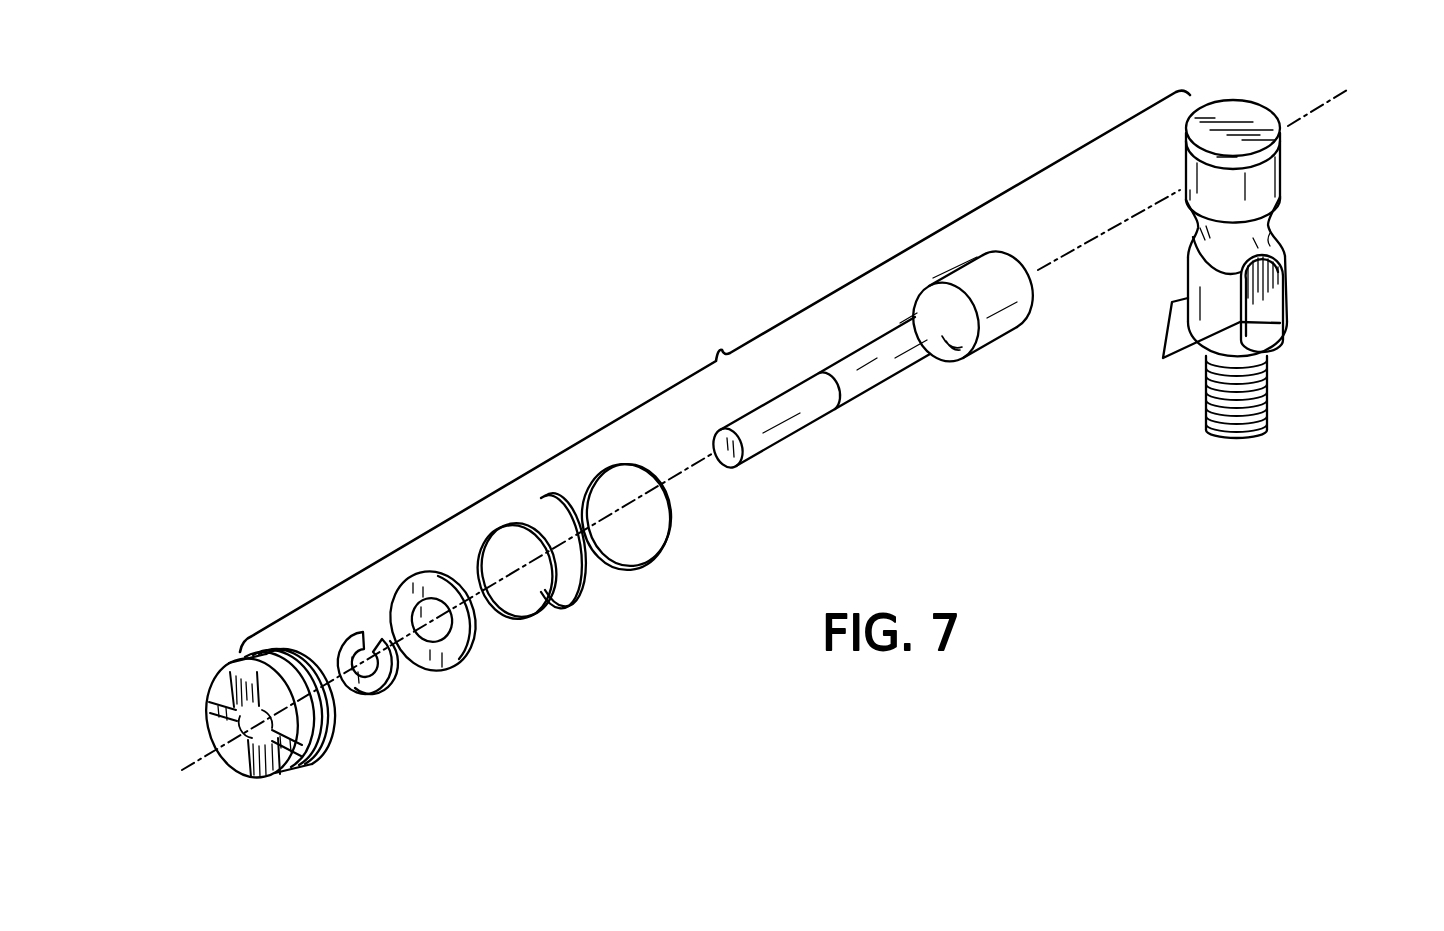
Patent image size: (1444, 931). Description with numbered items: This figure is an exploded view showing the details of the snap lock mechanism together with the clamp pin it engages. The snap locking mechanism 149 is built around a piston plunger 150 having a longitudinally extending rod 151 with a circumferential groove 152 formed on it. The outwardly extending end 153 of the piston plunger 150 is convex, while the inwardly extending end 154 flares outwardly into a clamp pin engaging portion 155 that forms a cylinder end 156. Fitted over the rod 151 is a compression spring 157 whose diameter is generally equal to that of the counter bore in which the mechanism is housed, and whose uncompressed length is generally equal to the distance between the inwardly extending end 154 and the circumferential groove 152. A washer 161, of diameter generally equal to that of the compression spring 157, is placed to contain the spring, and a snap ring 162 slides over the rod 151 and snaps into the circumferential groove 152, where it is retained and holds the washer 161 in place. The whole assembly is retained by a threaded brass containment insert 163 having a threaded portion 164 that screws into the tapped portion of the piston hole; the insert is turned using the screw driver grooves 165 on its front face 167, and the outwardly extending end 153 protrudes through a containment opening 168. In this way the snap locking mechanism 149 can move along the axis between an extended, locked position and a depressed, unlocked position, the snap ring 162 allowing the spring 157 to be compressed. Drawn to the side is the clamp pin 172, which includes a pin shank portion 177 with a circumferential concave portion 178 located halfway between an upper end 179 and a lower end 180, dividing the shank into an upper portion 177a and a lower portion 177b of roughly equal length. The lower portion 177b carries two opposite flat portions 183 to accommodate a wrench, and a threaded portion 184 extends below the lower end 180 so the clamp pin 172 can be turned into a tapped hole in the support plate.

The snap locking mechanism 149 is at (703, 638).
The piston plunger 150 is at (909, 412).
The rod 151 is at (790, 427).
The circumferential groove 152 is at (837, 410).
The outwardly extending end 153 is at (735, 466).
The inwardly extending end 154 is at (953, 359).
The clamp pin engaging portion 155 is at (1009, 349).
The cylinder end 156 is at (1030, 307).
The compression spring 157 is at (577, 590).
The washer 161 is at (470, 653).
The snap ring 162 is at (387, 683).
The threaded brass containment insert 163 is at (268, 744).
The threaded portion 164 is at (322, 720).
The screw driver grooves 165 is at (243, 770).
The front face 167 is at (217, 682).
The containment opening 168 is at (233, 727).
The clamp pin 172 is at (1277, 252).
The pin shank portion 177 is at (1305, 227).
The upper portion 177a is at (1282, 162).
The lower portion 177b is at (1284, 290).
The circumferential concave portion 178 is at (1272, 227).
The upper end 179 is at (1253, 112).
The lower end 180 is at (1283, 350).
The opposite flat portions 183 is at (1121, 361).
The threaded portion 184 is at (1268, 415).